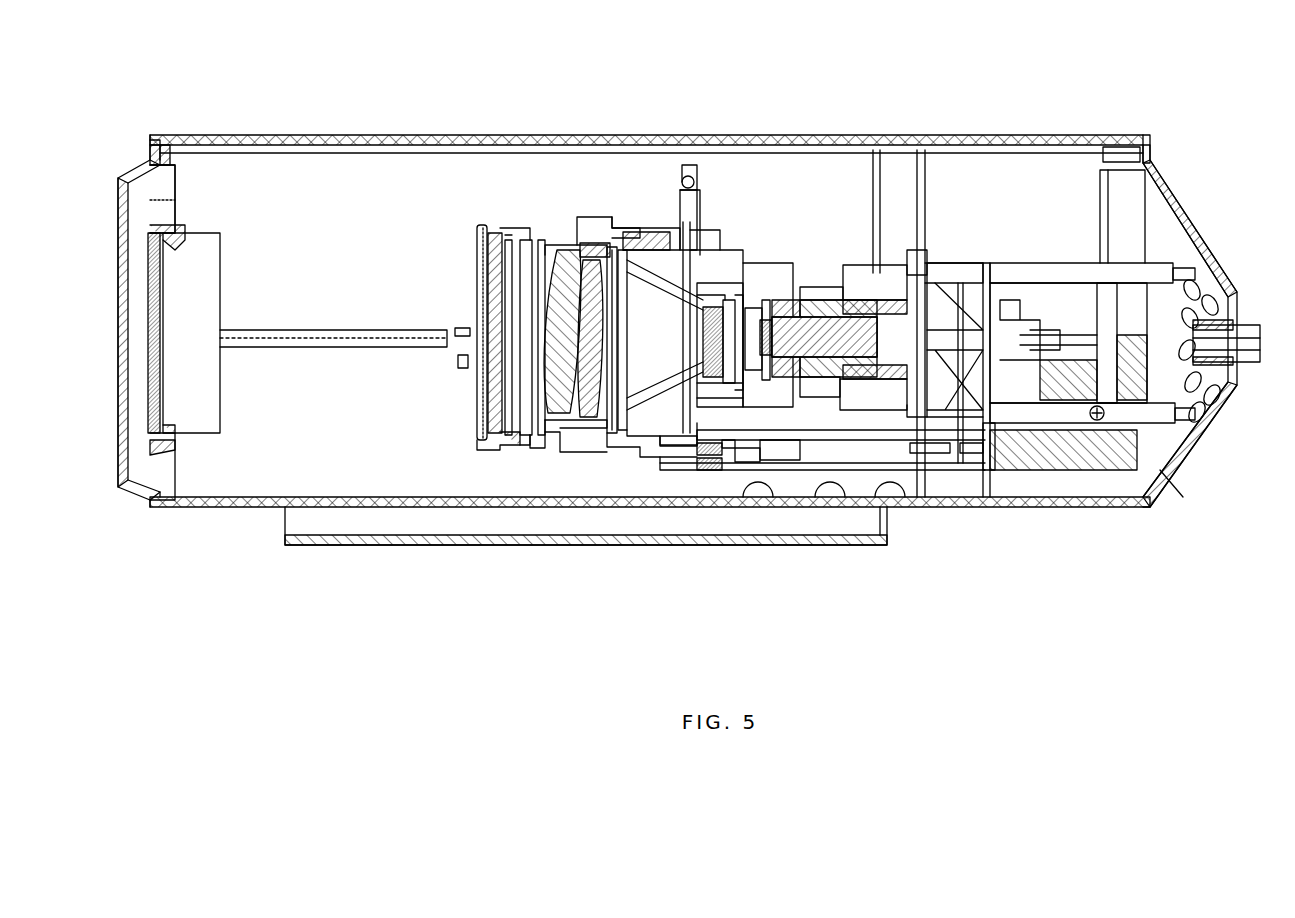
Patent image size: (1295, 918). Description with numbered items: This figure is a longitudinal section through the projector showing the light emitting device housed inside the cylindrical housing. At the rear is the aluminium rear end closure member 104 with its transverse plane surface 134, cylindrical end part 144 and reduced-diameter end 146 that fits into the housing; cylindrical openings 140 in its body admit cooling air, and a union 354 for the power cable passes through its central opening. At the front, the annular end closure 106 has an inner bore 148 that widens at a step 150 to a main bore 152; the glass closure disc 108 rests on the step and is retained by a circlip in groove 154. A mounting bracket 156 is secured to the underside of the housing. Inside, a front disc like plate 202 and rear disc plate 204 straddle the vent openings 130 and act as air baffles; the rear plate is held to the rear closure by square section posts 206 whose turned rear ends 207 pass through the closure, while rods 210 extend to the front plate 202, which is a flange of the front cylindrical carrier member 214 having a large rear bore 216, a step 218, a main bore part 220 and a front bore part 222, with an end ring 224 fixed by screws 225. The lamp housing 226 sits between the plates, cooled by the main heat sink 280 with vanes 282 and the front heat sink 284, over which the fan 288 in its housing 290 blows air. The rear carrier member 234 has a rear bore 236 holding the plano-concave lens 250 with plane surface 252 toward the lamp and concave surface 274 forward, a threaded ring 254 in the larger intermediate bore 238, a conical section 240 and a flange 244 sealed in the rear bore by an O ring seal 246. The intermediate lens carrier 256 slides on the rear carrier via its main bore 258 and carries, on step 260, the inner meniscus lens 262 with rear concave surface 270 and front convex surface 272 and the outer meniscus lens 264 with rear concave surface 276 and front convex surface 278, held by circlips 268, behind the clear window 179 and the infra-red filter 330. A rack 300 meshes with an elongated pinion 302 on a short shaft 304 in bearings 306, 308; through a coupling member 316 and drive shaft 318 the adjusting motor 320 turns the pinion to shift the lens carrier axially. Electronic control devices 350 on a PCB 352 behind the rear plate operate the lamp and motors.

The rear end closure member 104 is at (1236, 261).
The front annular end closure 106 is at (132, 175).
The glass closure disc 108 is at (203, 136).
The vent openings 130 is at (888, 510).
The transverse plane surface 134 is at (1226, 388).
The cylindrical openings 140 is at (1190, 250).
The cylindrical end part 144 is at (1160, 142).
The end of the end part 146 is at (1100, 180).
The cylindrical inner bore 148 is at (168, 262).
The step 150 is at (168, 413).
The main bore 152 is at (178, 245).
The groove 154 is at (146, 455).
The mounting bracket 156 is at (290, 525).
The clear window 179 is at (477, 270).
The front disc like plate 202 is at (703, 170).
The rear disc plate 204 is at (946, 136).
The square section posts 206 is at (1078, 272).
The turned rear ends 207 is at (1168, 203).
The rods 210 is at (700, 163).
The front cylindrical carrier member 214 is at (590, 258).
The large rear bore 216 is at (707, 204).
The step 218 is at (648, 215).
The main bore part 220 is at (622, 226).
The front bore part 222 is at (556, 250).
The end ring 224 is at (508, 448).
The screws 225 is at (512, 236).
The lamp housing 226 is at (875, 272).
The rear carrier member 234 is at (660, 238).
The rear bore 236 is at (808, 460).
The larger intermediate bore 238 is at (733, 285).
The conical section 240 is at (650, 430).
The flange 244 is at (702, 242).
The O ring seal 246 is at (706, 230).
The plano-concave lens 250 is at (560, 248).
The plane surface 252 is at (823, 345).
The ring 254 is at (706, 312).
The intermediate lens carrier 256 is at (610, 440).
The main bore 258 is at (586, 447).
The step 260 is at (540, 440).
The inner meniscus lens 262 is at (467, 342).
The outer meniscus lens 264 is at (505, 300).
The circlips 268 is at (560, 440).
The rear concave surface 270 is at (592, 370).
The front convex surface 272 is at (560, 352).
The surface 274 is at (704, 333).
The rear concave surface 276 is at (480, 287).
The front convex surface 278 is at (545, 402).
The main heat sink 280 is at (935, 442).
The vanes 282 is at (876, 136).
The front heat sink 284 is at (816, 440).
The fan 288 is at (940, 262).
The fan housing 290 is at (963, 258).
The rack 300 is at (665, 457).
The elongated pinion 302 is at (735, 462).
The short shaft 304 is at (797, 465).
The bearing 306 is at (740, 470).
The bearing 308 is at (731, 450).
The coupling member 316 is at (983, 472).
The drive shaft 318 is at (990, 472).
The adjusting motor 320 is at (1063, 472).
The infra-red filter 330 is at (480, 224).
The electronic control devices 350 is at (1082, 362).
The PCB 352 is at (1030, 400).
The union 354 is at (1230, 320).